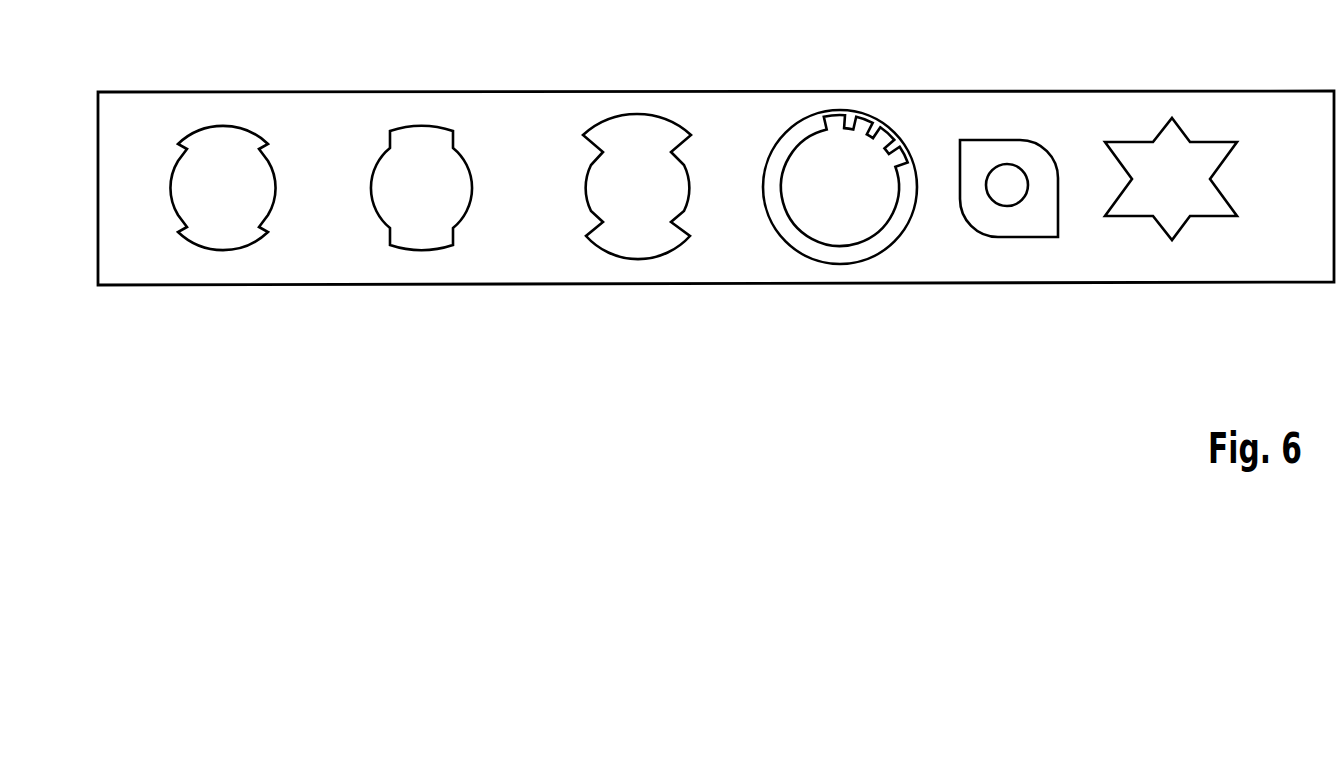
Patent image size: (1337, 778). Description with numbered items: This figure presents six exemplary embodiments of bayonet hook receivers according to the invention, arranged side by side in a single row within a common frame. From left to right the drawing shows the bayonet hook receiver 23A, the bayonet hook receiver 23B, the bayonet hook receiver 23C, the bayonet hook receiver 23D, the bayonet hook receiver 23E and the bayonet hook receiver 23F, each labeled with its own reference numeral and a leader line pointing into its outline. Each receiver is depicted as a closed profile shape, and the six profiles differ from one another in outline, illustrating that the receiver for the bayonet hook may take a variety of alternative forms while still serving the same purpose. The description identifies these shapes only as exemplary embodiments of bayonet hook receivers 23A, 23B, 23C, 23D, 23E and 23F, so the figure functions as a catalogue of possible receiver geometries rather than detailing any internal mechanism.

The bayonet hook receiver 23A is at (217, 165).
The bayonet hook receiver 23B is at (418, 165).
The bayonet hook receiver 23C is at (637, 163).
The bayonet hook receiver 23D is at (828, 163).
The bayonet hook receiver 23E is at (1033, 163).
The bayonet hook receiver 23F is at (1170, 142).